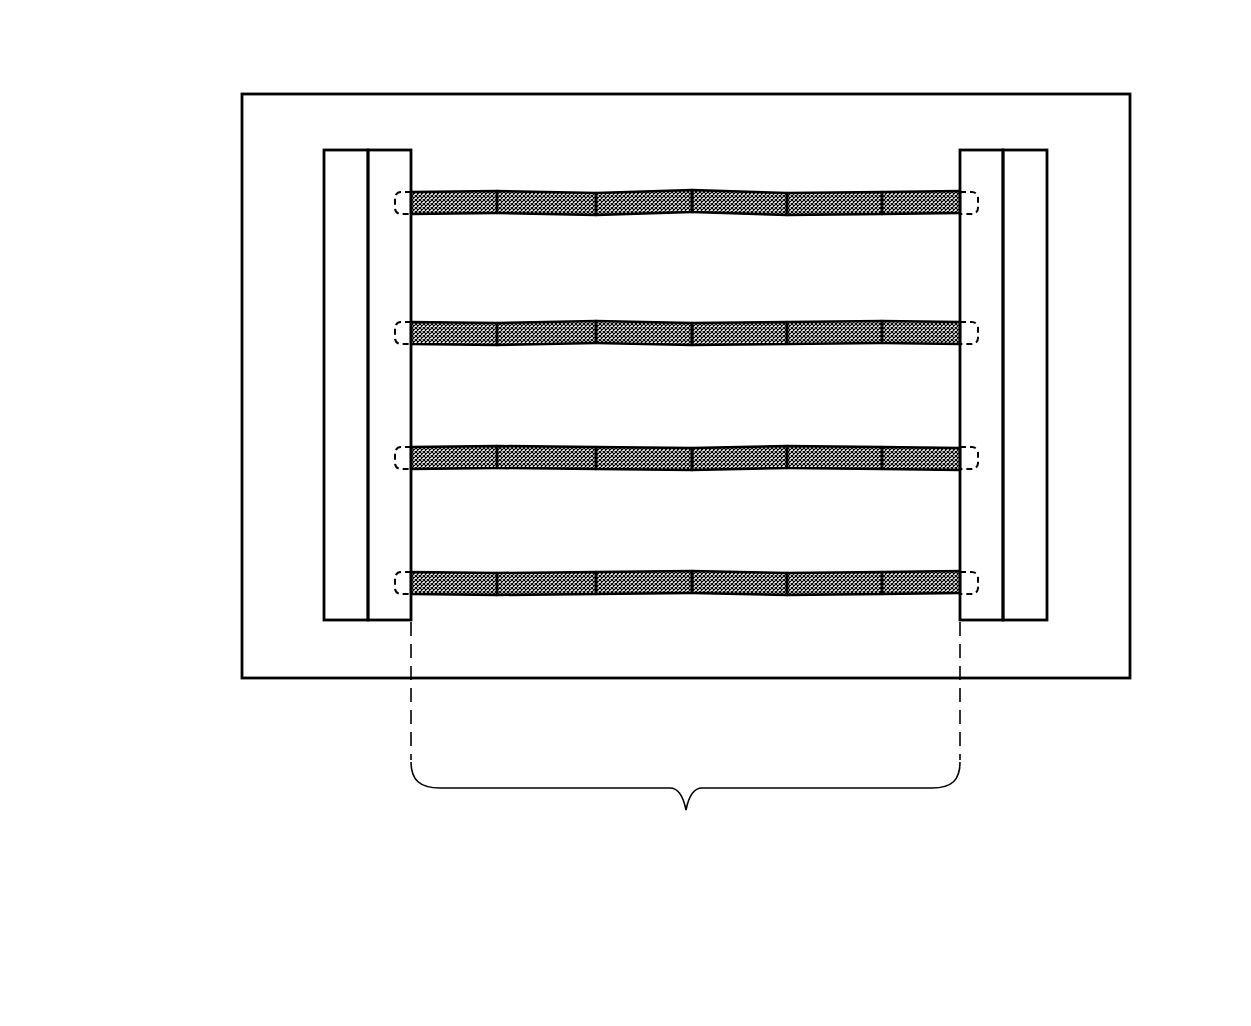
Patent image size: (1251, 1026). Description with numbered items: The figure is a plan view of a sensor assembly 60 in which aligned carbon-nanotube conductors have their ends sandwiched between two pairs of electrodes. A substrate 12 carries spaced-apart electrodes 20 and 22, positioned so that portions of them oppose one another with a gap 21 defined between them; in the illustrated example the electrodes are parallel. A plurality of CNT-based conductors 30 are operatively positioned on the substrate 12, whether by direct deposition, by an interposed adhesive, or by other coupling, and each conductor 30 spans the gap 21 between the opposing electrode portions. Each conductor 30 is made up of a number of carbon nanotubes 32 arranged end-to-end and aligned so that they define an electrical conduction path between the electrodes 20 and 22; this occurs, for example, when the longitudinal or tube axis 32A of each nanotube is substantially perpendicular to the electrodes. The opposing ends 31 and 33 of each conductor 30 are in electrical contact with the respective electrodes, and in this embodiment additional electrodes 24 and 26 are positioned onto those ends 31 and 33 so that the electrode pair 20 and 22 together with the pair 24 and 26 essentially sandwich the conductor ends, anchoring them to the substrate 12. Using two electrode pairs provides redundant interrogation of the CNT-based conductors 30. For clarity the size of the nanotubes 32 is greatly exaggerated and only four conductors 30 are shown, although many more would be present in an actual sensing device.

The sensor assembly 60 is at (193, 119).
The substrate 12 is at (240, 605).
The electrode 20 is at (345, 603).
The electrode 24 is at (388, 608).
The electrode 22 is at (1022, 603).
The electrode 26 is at (983, 605).
The CNT-based conductor 30 is at (656, 394).
The carbon nanotube 32 is at (928, 192).
The longitudinal axis 32A is at (710, 318).
The opposing end 31 is at (397, 586).
The opposing end 33 is at (977, 586).
The gap 21 is at (685, 736).